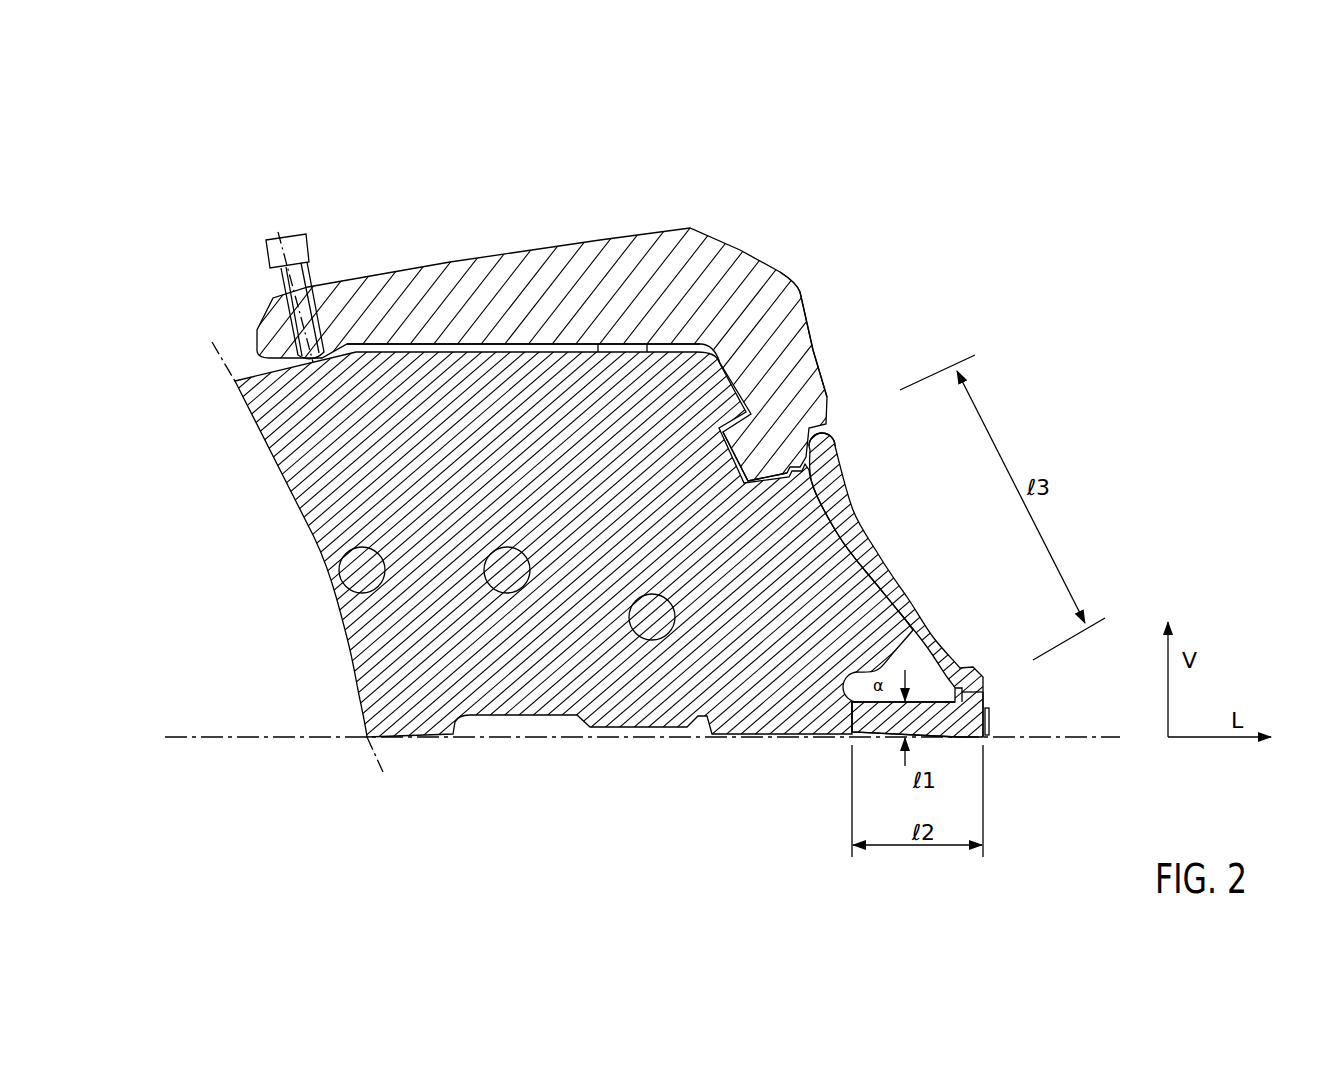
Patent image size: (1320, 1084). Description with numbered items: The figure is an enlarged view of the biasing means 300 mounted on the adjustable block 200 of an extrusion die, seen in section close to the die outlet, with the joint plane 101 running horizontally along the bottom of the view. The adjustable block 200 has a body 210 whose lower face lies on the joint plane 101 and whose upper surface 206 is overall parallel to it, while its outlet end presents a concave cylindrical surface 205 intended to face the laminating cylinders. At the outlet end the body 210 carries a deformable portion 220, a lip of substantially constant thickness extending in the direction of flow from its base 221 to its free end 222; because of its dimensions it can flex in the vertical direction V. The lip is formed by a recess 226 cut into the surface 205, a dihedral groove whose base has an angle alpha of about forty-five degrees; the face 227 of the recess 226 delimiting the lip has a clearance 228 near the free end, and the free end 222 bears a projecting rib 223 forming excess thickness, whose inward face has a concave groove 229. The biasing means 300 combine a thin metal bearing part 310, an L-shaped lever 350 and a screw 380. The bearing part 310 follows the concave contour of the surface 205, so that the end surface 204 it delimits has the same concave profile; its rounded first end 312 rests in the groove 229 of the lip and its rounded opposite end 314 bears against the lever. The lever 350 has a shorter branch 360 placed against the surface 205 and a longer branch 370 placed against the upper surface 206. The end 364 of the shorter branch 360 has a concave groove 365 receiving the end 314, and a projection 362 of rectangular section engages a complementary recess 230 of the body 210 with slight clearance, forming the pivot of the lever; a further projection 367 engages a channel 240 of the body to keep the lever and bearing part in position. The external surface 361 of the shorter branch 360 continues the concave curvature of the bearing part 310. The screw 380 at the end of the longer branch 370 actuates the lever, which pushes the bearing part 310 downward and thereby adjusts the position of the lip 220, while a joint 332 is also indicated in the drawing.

The joint plane 101 is at (213, 740).
The adjustable block 200 is at (297, 592).
The end surface of the adjustable block 204 is at (913, 597).
The surface of the body 205 is at (840, 505).
The upper surface of the block 206 is at (480, 346).
The body 210 is at (390, 708).
The deformable portion 220 is at (874, 736).
The base of the lip 221 is at (849, 714).
The free end of the lip 222 is at (978, 716).
The projecting rib 223 is at (979, 697).
The recess 226 is at (885, 668).
The face of the recess 227 is at (926, 705).
The clearance 228 is at (961, 678).
The concave groove 229 is at (970, 682).
The recess of the body 230 is at (748, 482).
The channel 240 is at (785, 478).
The biasing means 300 is at (921, 291).
The bearing part 310 is at (862, 553).
The first end of the bearing part 312 is at (958, 722).
The opposite end of the bearing part 314 is at (821, 424).
The joint 332 is at (720, 428).
The lever 350 is at (688, 259).
The shorter branch 360 is at (770, 350).
The external surface of the shorter branch 361 is at (809, 301).
The projection 362 is at (757, 450).
The end of the shorter branch 364 is at (824, 419).
The concave groove 365 is at (834, 447).
The projection 367 is at (800, 472).
The longer branch 370 is at (434, 283).
The screw 380 is at (259, 229).